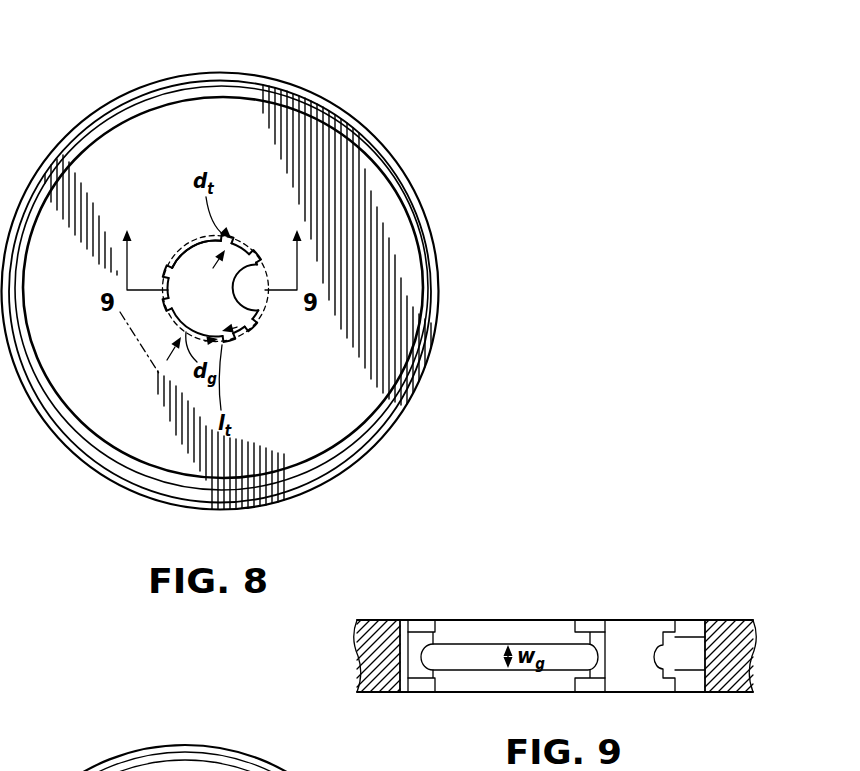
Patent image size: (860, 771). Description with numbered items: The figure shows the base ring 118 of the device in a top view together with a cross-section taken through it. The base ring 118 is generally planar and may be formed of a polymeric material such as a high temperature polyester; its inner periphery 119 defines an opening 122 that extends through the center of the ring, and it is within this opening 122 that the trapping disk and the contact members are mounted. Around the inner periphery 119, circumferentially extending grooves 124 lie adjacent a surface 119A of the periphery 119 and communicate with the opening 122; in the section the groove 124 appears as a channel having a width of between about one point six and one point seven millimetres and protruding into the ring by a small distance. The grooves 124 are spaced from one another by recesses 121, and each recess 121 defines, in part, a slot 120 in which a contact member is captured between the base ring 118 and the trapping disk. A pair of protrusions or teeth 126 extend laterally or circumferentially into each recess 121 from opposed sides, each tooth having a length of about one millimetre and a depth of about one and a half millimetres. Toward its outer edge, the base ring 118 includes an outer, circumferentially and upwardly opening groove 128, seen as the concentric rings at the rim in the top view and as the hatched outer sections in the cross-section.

In FIG. 8, the base ring 118 is at (352, 203).
In FIG. 9, the base ring 118 is at (731, 627).
In FIG. 8, the inner periphery 119 is at (197, 257).
In FIG. 9, the surface of the periphery 119A is at (552, 633).
In FIG. 8, the slot 120 is at (254, 290).
In FIG. 8, the recess 121 is at (237, 344).
In FIG. 8, the opening 122 is at (192, 276).
In FIG. 8, the groove 124 is at (264, 307).
In FIG. 9, the groove 124 is at (481, 648).
In FIG. 8, the teeth 126 is at (234, 237).
In FIG. 9, the teeth 126 is at (411, 640).
In FIG. 8, the outer groove 128 is at (200, 90).